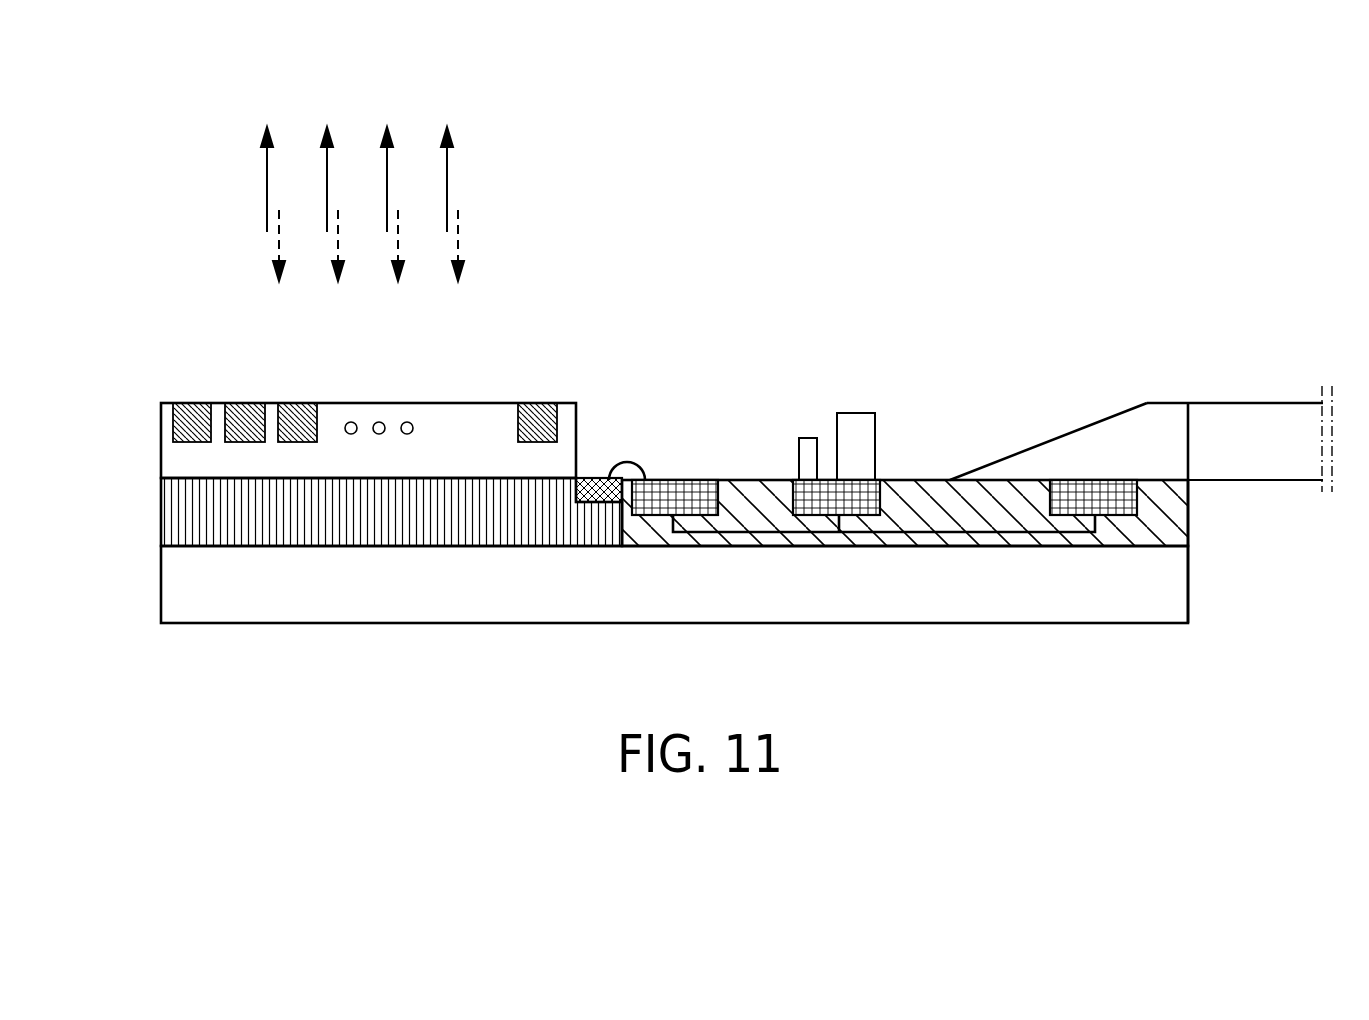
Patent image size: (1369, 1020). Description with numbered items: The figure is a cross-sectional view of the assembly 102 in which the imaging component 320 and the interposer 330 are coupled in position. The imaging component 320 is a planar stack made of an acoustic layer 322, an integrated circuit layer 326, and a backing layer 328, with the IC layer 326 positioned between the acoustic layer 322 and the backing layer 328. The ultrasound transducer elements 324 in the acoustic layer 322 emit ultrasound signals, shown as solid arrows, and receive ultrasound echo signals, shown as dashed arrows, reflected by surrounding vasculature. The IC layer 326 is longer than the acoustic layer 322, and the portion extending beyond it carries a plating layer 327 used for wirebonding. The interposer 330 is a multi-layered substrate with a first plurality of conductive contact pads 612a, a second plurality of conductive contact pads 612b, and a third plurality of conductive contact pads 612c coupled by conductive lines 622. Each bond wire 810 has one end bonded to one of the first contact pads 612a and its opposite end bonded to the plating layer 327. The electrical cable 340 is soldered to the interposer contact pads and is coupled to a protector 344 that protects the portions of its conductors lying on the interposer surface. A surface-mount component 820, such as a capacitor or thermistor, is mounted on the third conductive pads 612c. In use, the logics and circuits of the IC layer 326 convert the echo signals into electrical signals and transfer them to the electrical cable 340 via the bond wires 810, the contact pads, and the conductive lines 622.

The electronic device 102 is at (1168, 180).
The imaging component 320 is at (458, 348).
The acoustic layer 322 is at (161, 440).
The ultrasound transducer elements 324 is at (193, 403).
The integrated circuit (IC) layer 326 is at (161, 505).
The plating layer 327 is at (591, 478).
The backing layer 328 is at (161, 588).
The interposer 330 is at (1188, 516).
The electrical cable 340 is at (1267, 395).
The protector 344 is at (1069, 431).
The first plurality of conductive contact pads 612a is at (646, 516).
The second plurality of conductive contact pads 612b is at (860, 516).
The third plurality of conductive contact pads 612c is at (1117, 516).
The conductive lines 622 is at (740, 533).
The bond wire 810 is at (624, 462).
The surface-mount component 820 is at (807, 438).